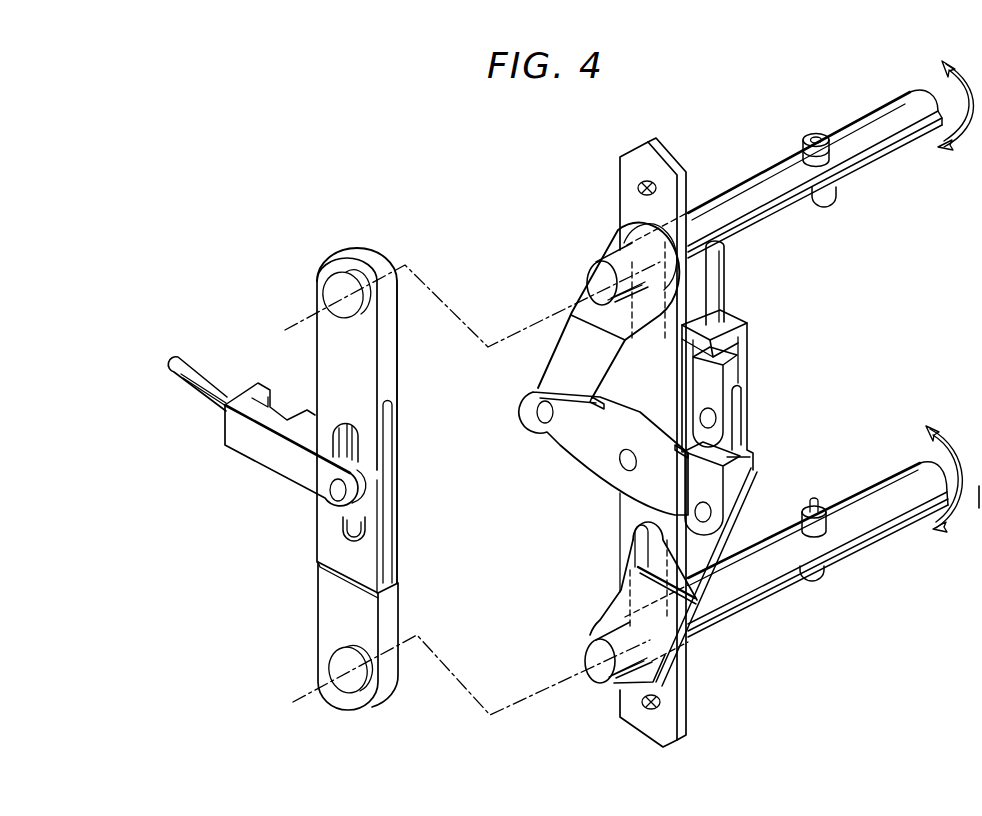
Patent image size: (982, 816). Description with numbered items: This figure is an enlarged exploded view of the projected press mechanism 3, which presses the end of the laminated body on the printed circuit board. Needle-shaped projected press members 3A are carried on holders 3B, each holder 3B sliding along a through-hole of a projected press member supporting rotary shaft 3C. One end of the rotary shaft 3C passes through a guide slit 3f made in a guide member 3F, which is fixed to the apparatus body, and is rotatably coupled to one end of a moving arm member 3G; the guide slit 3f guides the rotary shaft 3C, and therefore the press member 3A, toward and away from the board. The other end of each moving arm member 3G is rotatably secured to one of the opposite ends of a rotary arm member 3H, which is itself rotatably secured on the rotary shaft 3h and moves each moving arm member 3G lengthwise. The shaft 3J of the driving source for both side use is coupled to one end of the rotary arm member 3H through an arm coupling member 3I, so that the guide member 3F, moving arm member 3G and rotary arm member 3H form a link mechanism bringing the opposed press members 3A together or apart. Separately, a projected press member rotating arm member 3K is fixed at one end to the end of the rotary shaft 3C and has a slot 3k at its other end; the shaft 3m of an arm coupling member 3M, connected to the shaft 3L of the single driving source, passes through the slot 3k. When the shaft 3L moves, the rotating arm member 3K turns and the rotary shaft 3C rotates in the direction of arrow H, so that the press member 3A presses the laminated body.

The projected press mechanism 3 is at (545, 166).
The projected press member 3A is at (812, 500).
The holder 3B is at (830, 203).
The projected press member supporting rotary shaft 3C is at (764, 180).
The guide member 3F is at (623, 172).
The moving arm member 3G is at (562, 358).
The guide slit 3f is at (590, 448).
The rotary arm member 3H is at (602, 465).
The rotary shaft 3h is at (625, 468).
The arm coupling member 3I is at (748, 358).
The shaft 3J is at (727, 290).
The projected press member rotating arm member 3K is at (325, 355).
The slot 3k is at (330, 448).
The shaft 3L is at (193, 382).
The arm coupling member 3M is at (272, 457).
The shaft 3m is at (340, 533).
The arrow H is at (952, 296).